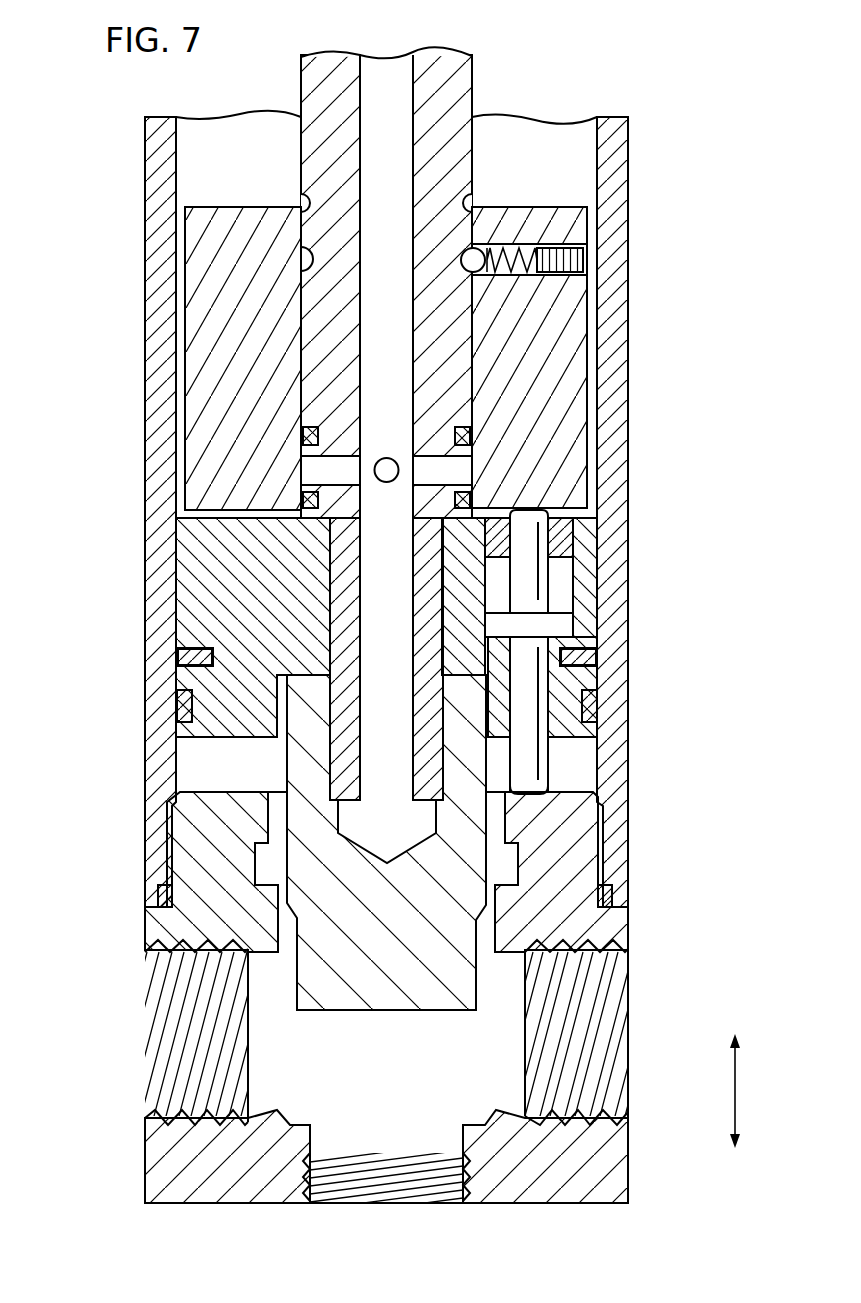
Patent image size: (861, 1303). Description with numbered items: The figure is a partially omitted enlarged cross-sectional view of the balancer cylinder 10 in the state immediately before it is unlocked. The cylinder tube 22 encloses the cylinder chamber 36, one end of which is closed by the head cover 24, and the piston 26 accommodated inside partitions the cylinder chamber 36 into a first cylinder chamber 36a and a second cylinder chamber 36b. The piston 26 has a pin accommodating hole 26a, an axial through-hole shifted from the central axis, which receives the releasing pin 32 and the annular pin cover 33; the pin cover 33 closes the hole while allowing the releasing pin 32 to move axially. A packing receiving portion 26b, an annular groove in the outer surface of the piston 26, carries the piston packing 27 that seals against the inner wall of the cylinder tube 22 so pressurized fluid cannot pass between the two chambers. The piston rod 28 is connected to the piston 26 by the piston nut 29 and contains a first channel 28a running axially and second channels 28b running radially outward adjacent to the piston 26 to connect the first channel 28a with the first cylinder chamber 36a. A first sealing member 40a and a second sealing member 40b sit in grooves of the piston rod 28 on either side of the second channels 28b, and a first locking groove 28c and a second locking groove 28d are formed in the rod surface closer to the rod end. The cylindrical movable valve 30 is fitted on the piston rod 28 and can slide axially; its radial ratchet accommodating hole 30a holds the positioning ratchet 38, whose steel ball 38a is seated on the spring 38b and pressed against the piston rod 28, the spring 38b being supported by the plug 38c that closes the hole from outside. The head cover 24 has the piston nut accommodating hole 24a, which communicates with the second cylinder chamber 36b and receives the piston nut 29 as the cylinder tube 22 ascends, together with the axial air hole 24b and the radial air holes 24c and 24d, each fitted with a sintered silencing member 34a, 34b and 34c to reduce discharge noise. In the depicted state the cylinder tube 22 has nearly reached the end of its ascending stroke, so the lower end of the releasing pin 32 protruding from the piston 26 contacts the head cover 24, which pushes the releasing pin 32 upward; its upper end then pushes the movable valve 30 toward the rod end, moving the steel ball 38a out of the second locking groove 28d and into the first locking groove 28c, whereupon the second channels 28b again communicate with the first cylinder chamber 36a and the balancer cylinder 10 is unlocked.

The balancer cylinder 10 is at (608, 71).
The cylinder tube 22 is at (152, 165).
The head cover 24 is at (389, 1020).
The piston nut accommodating hole 24a is at (258, 830).
The air hole 24b is at (305, 1170).
The air hole 24c is at (170, 1108).
The air hole 24d is at (604, 946).
The piston 26 is at (389, 627).
The pin accommodating hole 26a is at (572, 588).
The packing receiving portion 26b is at (562, 664).
The piston packing 27 is at (566, 650).
The piston rod 28 is at (303, 405).
The first channel 28a is at (386, 75).
The second channels 28b is at (316, 470).
The first locking groove 28c is at (302, 201).
The second locking groove 28d is at (300, 263).
The piston nut 29 is at (431, 997).
The movable valve 30 is at (394, 358).
The ratchet accommodating hole 30a is at (510, 274).
The releasing pin 32 is at (527, 705).
The pin cover 33 is at (570, 535).
The silencing member 34a is at (385, 1168).
The silencing member 34b is at (163, 1008).
The silencing member 34c is at (607, 1008).
The cylinder chamber 36 is at (534, 119).
The first cylinder chamber 36a is at (254, 135).
The second cylinder chamber 36b is at (207, 768).
The positioning ratchet 38 is at (594, 216).
The steel ball 38a is at (476, 252).
The spring 38b is at (522, 253).
The plug 38c is at (612, 251).
The first sealing member 40a is at (305, 433).
The second sealing member 40b is at (305, 500).